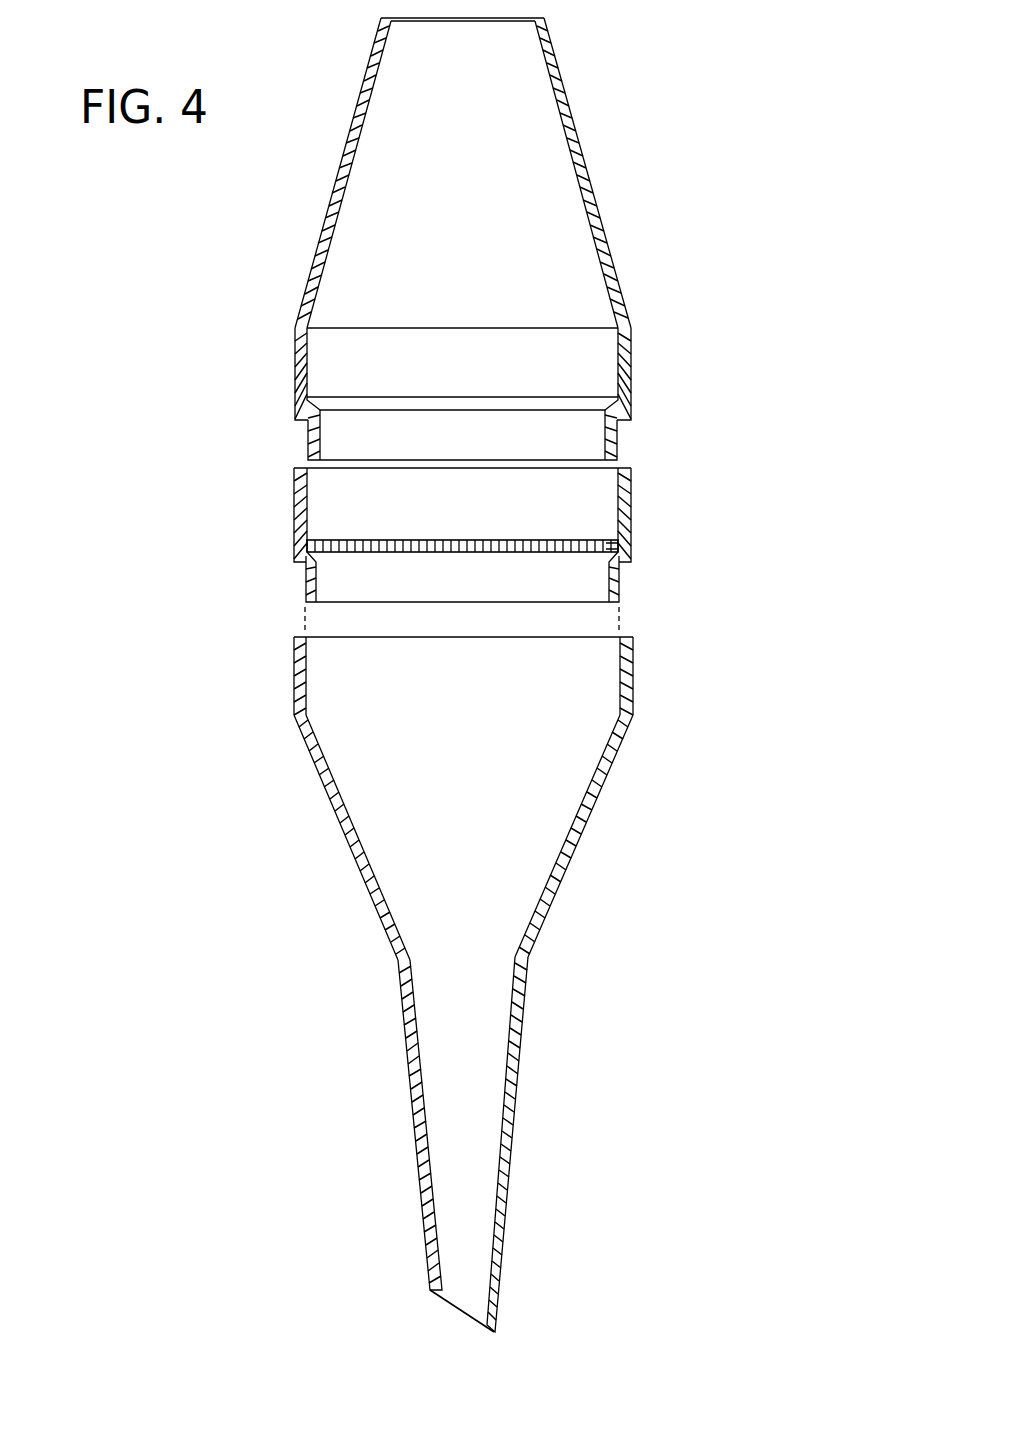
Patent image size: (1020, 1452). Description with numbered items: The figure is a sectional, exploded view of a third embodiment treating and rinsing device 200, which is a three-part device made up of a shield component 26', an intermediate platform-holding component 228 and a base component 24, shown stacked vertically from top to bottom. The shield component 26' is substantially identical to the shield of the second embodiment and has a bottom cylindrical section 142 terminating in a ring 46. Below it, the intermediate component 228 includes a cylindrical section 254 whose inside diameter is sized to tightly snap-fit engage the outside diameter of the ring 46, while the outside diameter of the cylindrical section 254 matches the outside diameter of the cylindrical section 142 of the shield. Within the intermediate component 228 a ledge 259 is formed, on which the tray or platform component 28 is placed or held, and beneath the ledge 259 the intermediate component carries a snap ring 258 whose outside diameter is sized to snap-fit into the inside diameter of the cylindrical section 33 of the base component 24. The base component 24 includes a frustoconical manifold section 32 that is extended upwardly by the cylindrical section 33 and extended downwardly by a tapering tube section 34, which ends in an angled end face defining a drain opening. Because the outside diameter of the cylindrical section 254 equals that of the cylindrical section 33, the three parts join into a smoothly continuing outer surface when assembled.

The treating and rinsing device 200 is at (613, 136).
The shield component 26' is at (487, 173).
The bottom cylindrical section 142 is at (295, 378).
The ring 46 is at (304, 440).
The cylindrical section 254 is at (294, 500).
The platform component 28 is at (441, 539).
The ledge 259 is at (612, 539).
The snap ring 258 is at (621, 585).
The intermediate platform-holding component 228 is at (636, 536).
The cylindrical section 33 is at (633, 672).
The frustoconical manifold section 32 is at (603, 788).
The base component 24 is at (575, 867).
The tapering tube section 34 is at (518, 1096).